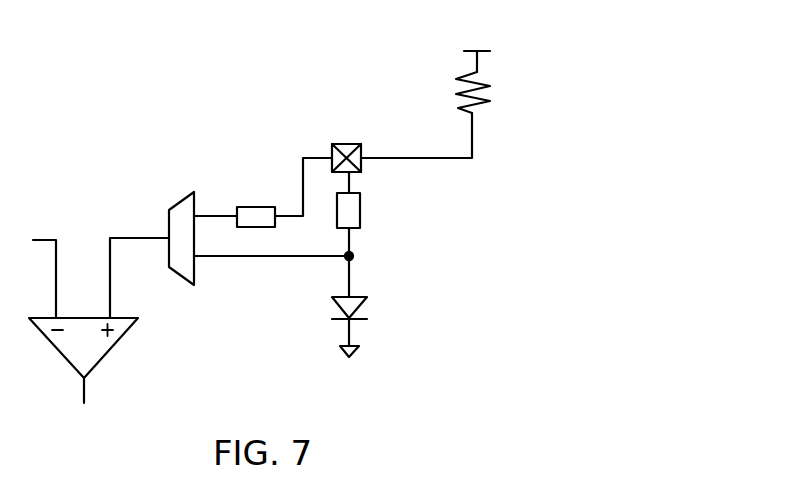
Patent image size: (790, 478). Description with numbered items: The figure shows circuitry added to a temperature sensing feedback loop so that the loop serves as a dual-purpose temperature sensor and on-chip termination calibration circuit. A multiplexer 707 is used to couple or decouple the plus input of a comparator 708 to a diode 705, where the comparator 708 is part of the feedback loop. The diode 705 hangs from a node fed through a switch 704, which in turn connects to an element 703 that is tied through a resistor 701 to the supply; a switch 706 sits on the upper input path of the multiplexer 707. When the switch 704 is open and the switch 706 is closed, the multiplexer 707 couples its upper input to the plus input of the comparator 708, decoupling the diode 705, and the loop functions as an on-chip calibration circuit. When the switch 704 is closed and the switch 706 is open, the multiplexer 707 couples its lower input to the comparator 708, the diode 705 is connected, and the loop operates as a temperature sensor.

The resistor 701 is at (458, 78).
The mixer 703 is at (338, 144).
The switch 704 is at (361, 210).
The diode 705 is at (340, 297).
The switch 706 is at (255, 207).
The multiplexer 707 is at (177, 194).
The comparator 708 is at (118, 340).